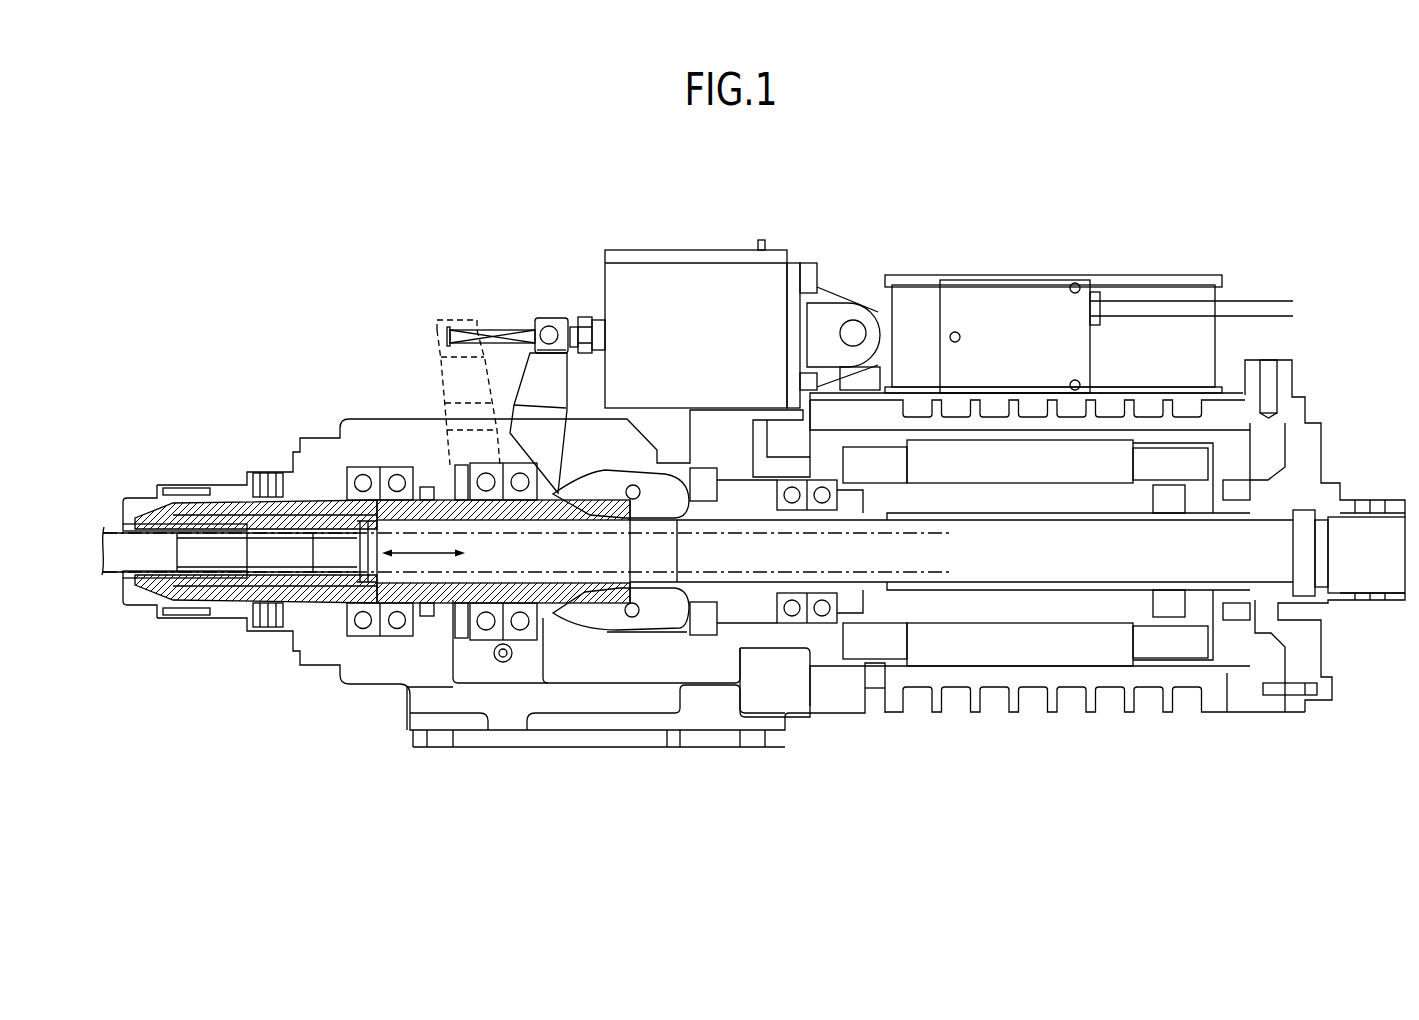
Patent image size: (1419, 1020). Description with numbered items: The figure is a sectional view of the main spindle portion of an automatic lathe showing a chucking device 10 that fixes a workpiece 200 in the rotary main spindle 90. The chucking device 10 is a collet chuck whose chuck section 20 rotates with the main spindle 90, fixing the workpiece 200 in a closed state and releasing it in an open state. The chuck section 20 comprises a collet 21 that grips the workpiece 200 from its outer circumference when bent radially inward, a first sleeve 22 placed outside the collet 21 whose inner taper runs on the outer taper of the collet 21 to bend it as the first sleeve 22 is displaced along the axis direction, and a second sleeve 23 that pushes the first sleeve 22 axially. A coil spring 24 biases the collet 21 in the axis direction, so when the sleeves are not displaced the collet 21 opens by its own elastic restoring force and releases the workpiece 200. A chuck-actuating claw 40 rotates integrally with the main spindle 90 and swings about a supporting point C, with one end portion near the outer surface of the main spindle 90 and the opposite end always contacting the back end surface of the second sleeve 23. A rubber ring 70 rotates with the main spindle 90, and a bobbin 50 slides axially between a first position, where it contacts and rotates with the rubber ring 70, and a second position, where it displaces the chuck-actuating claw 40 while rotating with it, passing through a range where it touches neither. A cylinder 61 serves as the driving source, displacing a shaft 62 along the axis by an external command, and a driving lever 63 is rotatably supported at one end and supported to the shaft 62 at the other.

The chucking device 10 is at (411, 304).
The chuck section 20 is at (272, 690).
The collet 21 is at (145, 590).
The first sleeve 22 is at (218, 587).
The second sleeve 23 is at (357, 613).
The coil spring 24 is at (268, 522).
The chuck-actuating claw 40 is at (598, 612).
The bobbin 50 is at (524, 612).
The cylinder 61 is at (603, 292).
The shaft 62 is at (490, 323).
The driving lever 63 is at (533, 383).
The rubber ring 70 is at (458, 466).
The main spindle 90 is at (430, 496).
The workpiece 200 is at (105, 500).
The supporting point C is at (632, 618).